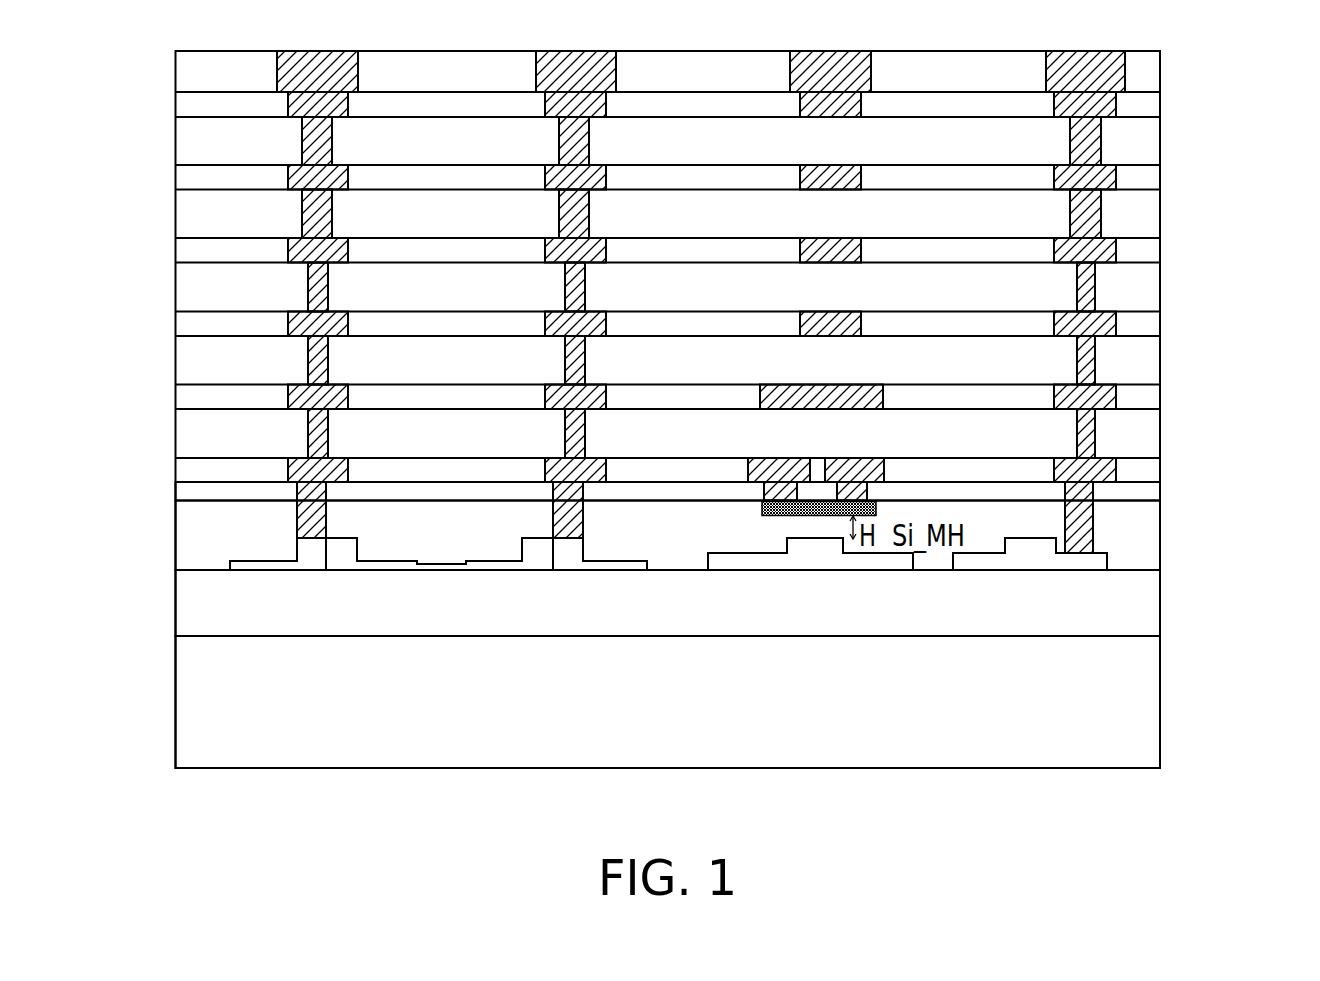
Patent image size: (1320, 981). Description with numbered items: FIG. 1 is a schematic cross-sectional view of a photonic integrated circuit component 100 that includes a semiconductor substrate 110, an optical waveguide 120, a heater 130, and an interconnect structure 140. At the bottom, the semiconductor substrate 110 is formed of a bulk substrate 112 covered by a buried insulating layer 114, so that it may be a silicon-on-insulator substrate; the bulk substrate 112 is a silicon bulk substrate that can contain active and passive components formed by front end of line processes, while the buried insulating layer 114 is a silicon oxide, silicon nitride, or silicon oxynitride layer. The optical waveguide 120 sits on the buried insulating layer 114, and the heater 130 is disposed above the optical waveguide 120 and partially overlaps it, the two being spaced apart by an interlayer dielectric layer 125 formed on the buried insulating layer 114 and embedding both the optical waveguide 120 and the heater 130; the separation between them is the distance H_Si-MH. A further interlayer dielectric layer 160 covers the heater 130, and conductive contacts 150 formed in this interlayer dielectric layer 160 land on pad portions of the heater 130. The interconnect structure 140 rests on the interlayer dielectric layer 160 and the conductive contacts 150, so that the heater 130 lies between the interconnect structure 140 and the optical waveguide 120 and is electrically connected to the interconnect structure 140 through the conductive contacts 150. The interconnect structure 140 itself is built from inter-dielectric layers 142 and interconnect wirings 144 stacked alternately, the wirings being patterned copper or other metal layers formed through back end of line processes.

The photonic integrated circuit component 100 is at (1230, 821).
The semiconductor substrate 110 is at (742, 669).
The bulk substrate 112 is at (712, 702).
The buried insulating layer 114 is at (1140, 610).
The optical waveguide 120 is at (818, 561).
The interlayer dielectric layer 125 is at (185, 535).
The heater 130 is at (773, 516).
The interconnect structure 140 is at (685, 302).
The inter-dielectric layers 142 is at (1152, 140).
The interconnect wirings 144 is at (1107, 252).
The conductive contacts 150 is at (785, 490).
The interlayer dielectric layer 160 is at (185, 488).